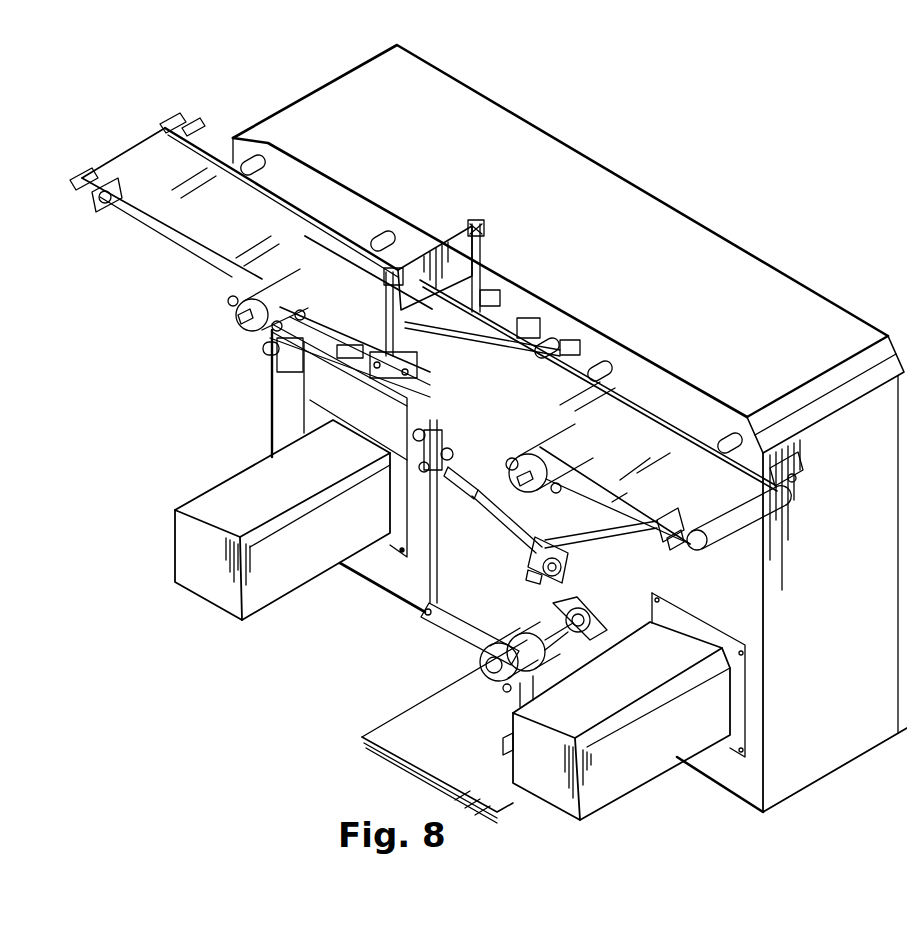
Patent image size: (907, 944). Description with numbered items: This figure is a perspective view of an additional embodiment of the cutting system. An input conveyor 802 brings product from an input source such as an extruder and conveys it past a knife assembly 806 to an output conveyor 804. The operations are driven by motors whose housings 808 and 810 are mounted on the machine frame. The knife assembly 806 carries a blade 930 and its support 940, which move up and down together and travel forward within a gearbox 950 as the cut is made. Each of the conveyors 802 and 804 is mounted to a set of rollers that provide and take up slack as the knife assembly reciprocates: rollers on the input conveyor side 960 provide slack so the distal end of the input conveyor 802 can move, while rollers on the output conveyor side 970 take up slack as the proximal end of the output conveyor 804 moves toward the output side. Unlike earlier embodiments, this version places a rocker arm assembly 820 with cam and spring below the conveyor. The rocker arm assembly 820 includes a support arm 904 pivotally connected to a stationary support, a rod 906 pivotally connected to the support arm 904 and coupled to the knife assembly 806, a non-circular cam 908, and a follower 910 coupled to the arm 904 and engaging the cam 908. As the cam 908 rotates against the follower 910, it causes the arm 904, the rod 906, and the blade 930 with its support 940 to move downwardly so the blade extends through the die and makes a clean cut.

The output conveyor side 970 is at (229, 99).
The output conveyor 804 is at (163, 158).
The knife assembly 806 is at (474, 273).
The blade 930 is at (447, 243).
The support 940 is at (484, 258).
The input conveyor 802 is at (646, 432).
The input conveyor side 960 is at (800, 475).
The gearbox 950 is at (272, 419).
The motor housing 808 is at (178, 512).
The rod 906 is at (433, 598).
The rocker arm assembly 820 is at (383, 624).
The support arm 904 is at (445, 632).
The cam 908 is at (480, 648).
The follower 910 is at (503, 690).
The motor housing 810 is at (576, 805).